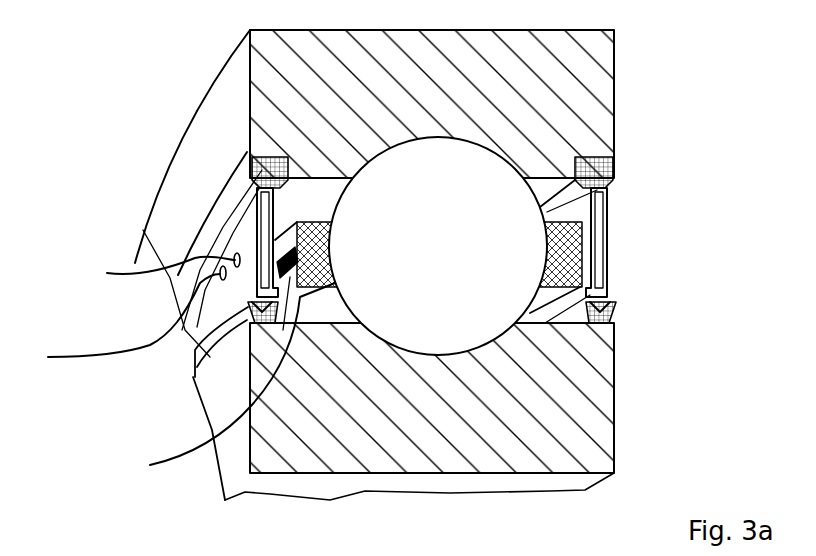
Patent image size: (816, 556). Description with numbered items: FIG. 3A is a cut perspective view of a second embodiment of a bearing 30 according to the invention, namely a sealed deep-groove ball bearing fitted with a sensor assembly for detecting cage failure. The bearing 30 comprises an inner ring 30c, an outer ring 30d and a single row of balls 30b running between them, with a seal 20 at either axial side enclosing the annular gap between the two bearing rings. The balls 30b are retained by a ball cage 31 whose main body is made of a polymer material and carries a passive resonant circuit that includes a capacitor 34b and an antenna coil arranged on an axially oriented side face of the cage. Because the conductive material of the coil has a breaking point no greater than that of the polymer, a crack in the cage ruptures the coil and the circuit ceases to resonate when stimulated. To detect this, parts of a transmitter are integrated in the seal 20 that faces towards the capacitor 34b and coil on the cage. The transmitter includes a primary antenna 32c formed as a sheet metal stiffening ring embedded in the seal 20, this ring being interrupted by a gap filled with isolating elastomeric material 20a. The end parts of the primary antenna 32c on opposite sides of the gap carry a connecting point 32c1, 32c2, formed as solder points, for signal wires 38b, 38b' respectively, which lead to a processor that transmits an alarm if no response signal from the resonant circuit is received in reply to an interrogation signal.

The bearing 30 is at (634, 164).
The outer ring 30d is at (567, 92).
The inner ring 30c is at (560, 380).
The balls 30b is at (495, 205).
The ball cage 31 is at (567, 248).
The seal 20 is at (230, 323).
The isolating elastomeric material 20a is at (258, 170).
The primary antenna 32c is at (257, 212).
The connecting point 32c1 is at (197, 327).
The connecting point 32c2 is at (262, 247).
The capacitor 34b is at (350, 265).
The signal wire 38b is at (160, 273).
The signal wire 38b' is at (327, 311).